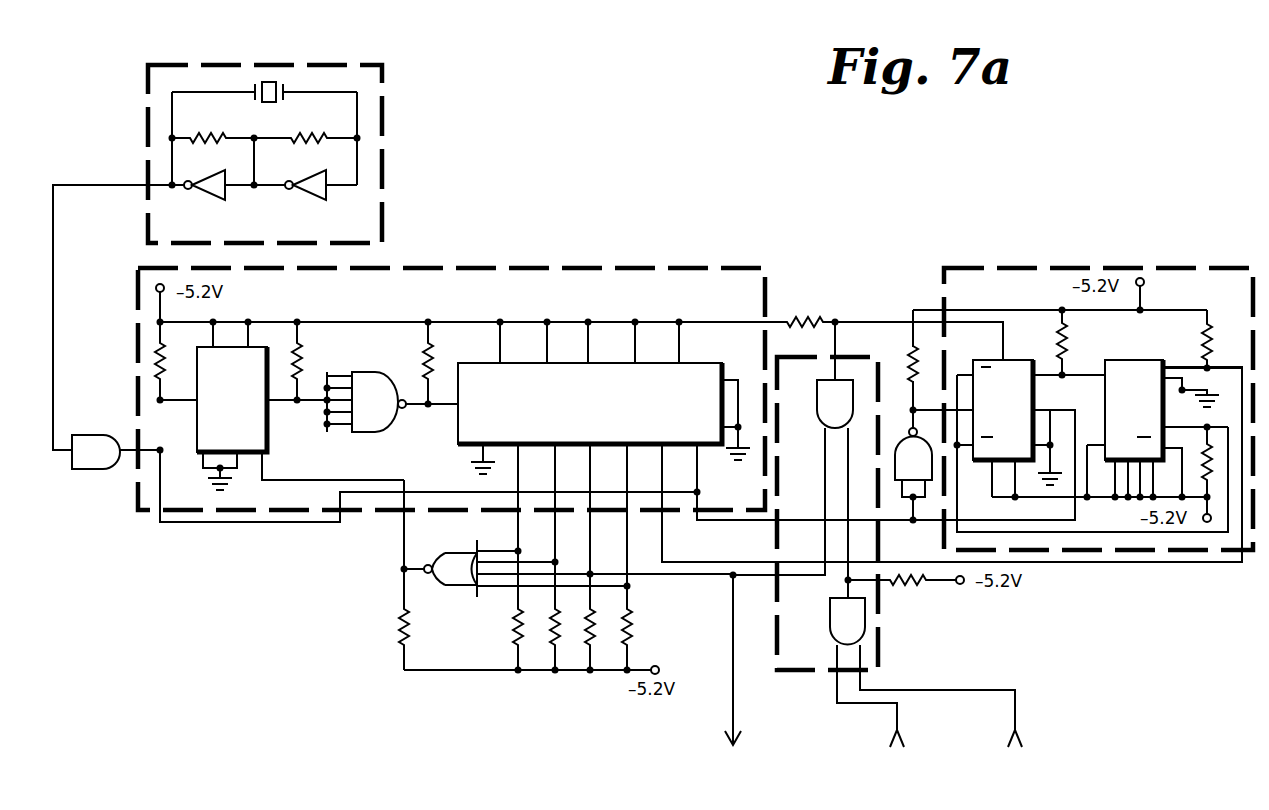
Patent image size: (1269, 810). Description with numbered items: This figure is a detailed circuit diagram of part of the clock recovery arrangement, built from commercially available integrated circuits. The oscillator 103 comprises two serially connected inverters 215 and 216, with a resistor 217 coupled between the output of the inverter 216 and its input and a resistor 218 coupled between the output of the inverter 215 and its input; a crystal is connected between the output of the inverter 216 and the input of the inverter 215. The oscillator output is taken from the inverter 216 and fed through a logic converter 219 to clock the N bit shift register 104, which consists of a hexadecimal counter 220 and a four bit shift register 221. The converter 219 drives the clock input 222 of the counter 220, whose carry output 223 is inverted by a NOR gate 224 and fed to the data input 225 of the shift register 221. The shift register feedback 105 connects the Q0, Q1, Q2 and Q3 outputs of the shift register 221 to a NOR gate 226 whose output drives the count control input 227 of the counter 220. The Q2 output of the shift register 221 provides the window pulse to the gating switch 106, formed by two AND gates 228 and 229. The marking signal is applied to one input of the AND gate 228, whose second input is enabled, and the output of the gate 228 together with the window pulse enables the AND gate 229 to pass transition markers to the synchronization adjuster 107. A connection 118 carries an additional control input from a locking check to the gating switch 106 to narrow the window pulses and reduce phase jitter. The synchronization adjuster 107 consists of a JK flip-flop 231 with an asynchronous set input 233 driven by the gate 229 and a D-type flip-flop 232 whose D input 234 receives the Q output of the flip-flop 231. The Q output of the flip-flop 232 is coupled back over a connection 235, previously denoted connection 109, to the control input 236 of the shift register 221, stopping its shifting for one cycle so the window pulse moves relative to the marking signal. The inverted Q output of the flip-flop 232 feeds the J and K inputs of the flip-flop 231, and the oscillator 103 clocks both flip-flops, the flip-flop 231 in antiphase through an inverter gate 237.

The oscillator 103 is at (383, 75).
The N bit shift register 104 is at (718, 268).
The shift register feedback 105 is at (403, 547).
The gating switch 106 is at (881, 630).
The synchronization adjuster 107 is at (1125, 268).
The connection 109 is at (1164, 563).
The connection 118 is at (900, 714).
The inverter 215 is at (316, 201).
The inverter 216 is at (214, 201).
The resistor 217 is at (208, 134).
The resistor 218 is at (312, 134).
The logic converter 219 is at (90, 470).
The hexadecimal counter 220 is at (268, 434).
The four bit shift register 221 is at (700, 362).
The clock input 222 is at (157, 400).
The carry output 223 is at (297, 404).
The NOR gate 224 is at (374, 433).
The data input 225 is at (444, 406).
The NOR gate 226 is at (460, 587).
The count control input 227 is at (306, 480).
The AND gate 228 is at (829, 616).
The AND gate 229 is at (819, 393).
The JK flip-flop 231 is at (986, 359).
The D-type flip-flop 232 is at (1122, 359).
The asynchronous set input 233 is at (1005, 347).
The D input 234 is at (1098, 378).
The connection 235 is at (1122, 563).
The control input 236 is at (666, 467).
The inverter gate 237 is at (898, 443).